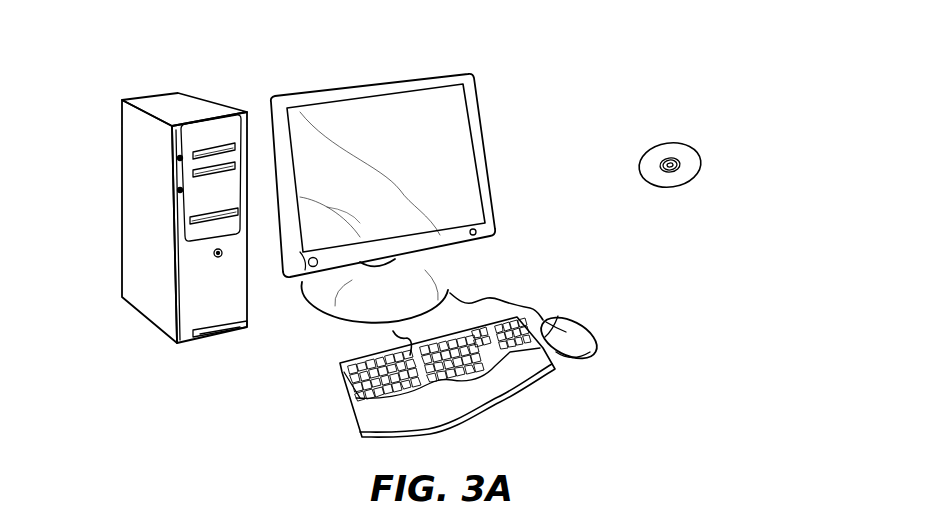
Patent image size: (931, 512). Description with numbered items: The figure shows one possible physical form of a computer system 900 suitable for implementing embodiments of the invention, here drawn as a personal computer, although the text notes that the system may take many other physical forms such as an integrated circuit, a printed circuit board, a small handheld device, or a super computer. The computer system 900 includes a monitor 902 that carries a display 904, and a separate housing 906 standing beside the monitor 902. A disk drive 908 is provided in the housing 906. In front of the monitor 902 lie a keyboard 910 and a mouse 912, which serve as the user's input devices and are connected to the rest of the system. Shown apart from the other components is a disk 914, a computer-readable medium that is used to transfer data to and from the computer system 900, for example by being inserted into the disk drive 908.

The computer system 900 is at (612, 48).
The monitor 902 is at (488, 173).
The display 904 is at (443, 113).
The housing 906 is at (172, 103).
The disk drive 908 is at (230, 213).
The keyboard 910 is at (350, 407).
The mouse 912 is at (598, 332).
The disk 914 is at (687, 142).